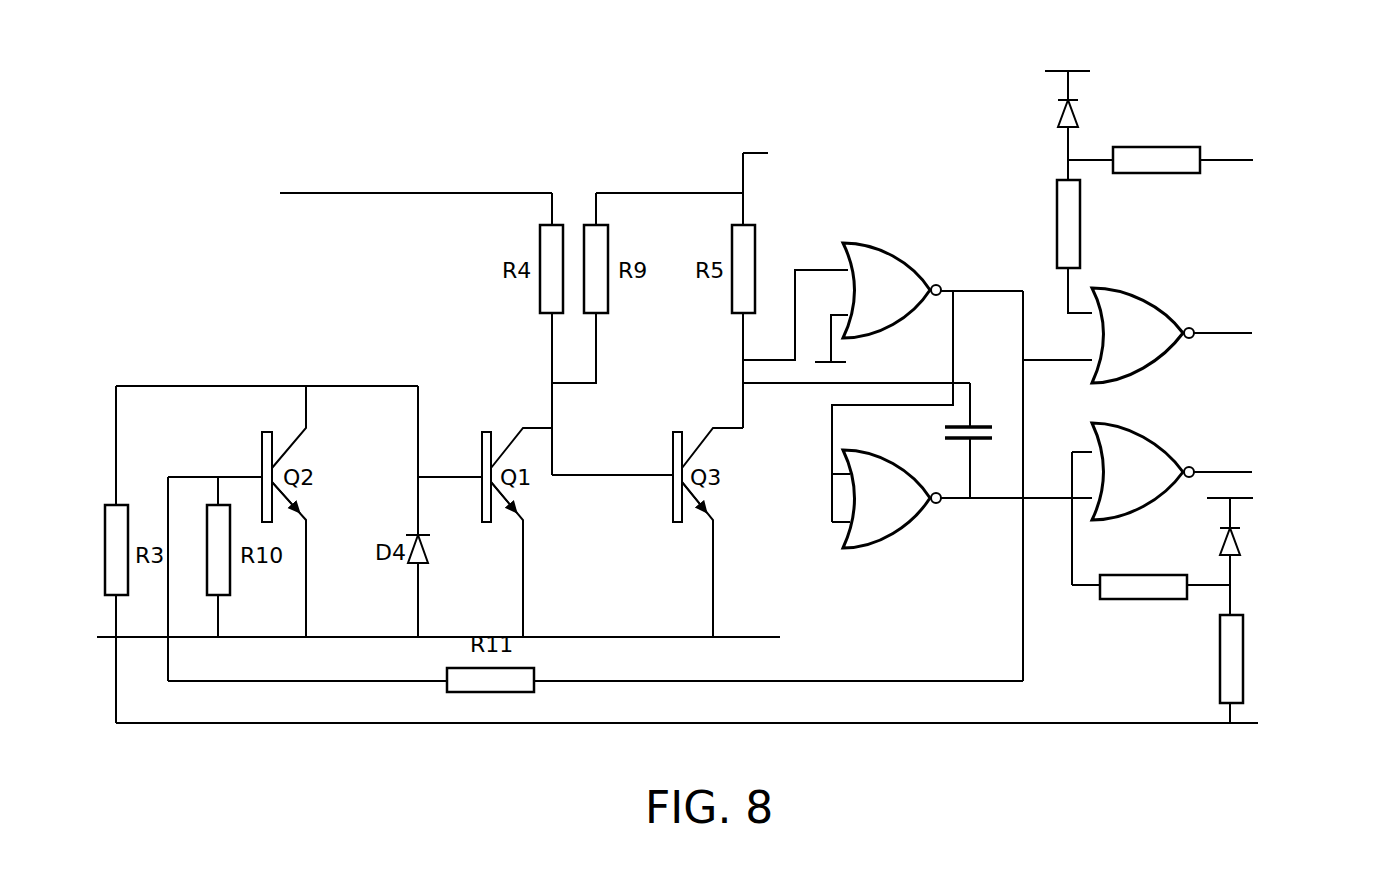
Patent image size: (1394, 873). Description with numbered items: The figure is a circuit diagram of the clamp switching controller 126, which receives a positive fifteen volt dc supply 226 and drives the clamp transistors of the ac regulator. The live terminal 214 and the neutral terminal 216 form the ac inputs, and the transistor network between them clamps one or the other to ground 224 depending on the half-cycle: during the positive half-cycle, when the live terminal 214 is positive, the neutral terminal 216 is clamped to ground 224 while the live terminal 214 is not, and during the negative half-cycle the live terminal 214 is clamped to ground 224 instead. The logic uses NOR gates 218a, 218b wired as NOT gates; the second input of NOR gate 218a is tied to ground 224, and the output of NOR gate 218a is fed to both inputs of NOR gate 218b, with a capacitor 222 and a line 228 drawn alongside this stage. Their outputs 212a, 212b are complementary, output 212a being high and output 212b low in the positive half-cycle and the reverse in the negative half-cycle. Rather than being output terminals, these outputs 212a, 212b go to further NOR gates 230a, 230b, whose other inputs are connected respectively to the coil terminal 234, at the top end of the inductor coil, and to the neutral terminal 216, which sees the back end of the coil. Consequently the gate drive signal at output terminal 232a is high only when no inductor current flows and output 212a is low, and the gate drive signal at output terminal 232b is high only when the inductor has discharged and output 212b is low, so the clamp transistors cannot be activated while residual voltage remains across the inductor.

The live terminal 214 is at (291, 185).
The neutral terminal 216 is at (1272, 740).
The +15V supply rail 226 is at (698, 145).
The clamp switching controller 126 is at (1208, 373).
The coil terminal 234 is at (1268, 140).
The NOR gate 218a is at (905, 250).
The NOR gate 218b is at (905, 540).
The output 212a is at (977, 291).
The output 212b is at (1048, 497).
The NOR gate 230a is at (1150, 291).
The NOR gate 230b is at (1150, 427).
The output terminal 232a is at (1275, 313).
The output terminal 232b is at (1275, 450).
The capacitor C3 222 is at (936, 433).
The ground 224 is at (607, 636).
The feedback line 228 is at (1028, 632).